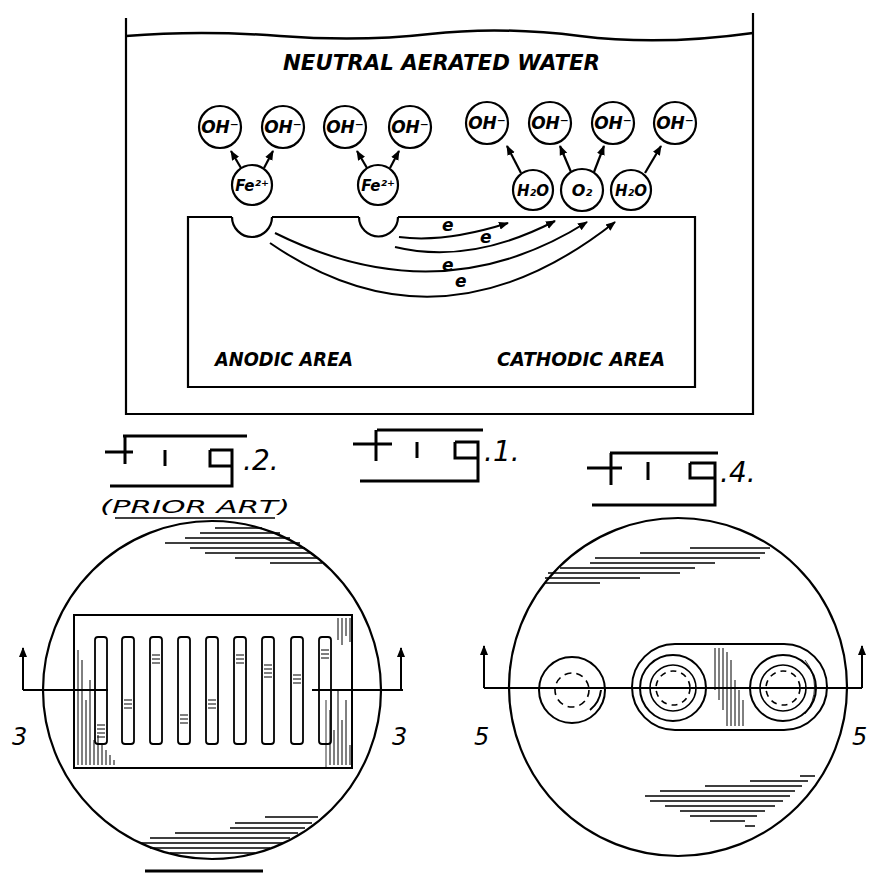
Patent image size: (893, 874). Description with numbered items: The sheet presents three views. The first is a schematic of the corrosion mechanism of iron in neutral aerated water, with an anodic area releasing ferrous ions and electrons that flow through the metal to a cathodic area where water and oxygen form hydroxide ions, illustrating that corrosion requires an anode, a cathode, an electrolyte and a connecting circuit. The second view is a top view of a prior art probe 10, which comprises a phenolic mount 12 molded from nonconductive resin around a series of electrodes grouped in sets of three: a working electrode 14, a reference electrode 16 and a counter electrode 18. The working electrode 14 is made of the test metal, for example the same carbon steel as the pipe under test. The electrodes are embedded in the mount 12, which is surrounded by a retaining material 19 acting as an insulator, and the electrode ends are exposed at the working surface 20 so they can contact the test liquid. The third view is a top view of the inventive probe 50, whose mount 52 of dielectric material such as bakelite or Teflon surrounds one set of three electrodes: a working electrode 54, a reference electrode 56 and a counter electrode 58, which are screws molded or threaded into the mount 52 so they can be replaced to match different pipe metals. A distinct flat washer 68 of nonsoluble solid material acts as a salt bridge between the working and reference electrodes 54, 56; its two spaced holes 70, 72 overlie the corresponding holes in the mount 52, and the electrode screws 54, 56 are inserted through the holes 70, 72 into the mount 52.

In FIG. 2, the probe 10 is at (403, 612).
In FIG. 2, the phenolic mount 12 is at (105, 770).
In FIG. 2, the working electrode 14 is at (240, 637).
In FIG. 2, the reference electrode 16 is at (128, 637).
In FIG. 2, the counter electrode 18 is at (101, 637).
In FIG. 2, the retaining material 19 is at (138, 830).
In FIG. 2, the working surface 20 is at (340, 770).
In FIG. 4, the probe 50 is at (800, 542).
In FIG. 4, the mount 52 is at (600, 556).
In FIG. 4, the working electrode 54 is at (798, 660).
In FIG. 4, the reference electrode 56 is at (665, 660).
In FIG. 4, the counter electrode 58 is at (582, 660).
In FIG. 4, the washer 68 is at (742, 732).
In FIG. 4, the hole 70 is at (782, 730).
In FIG. 4, the hole 72 is at (664, 733).